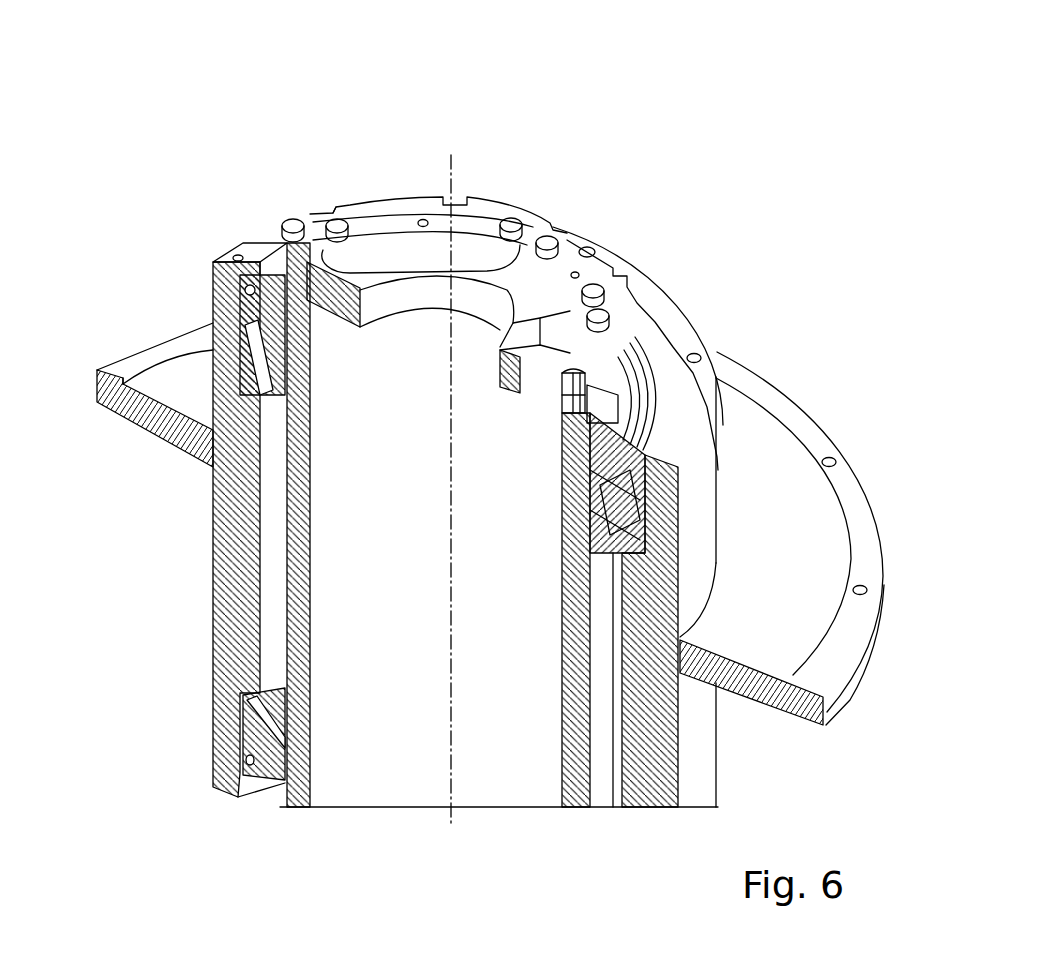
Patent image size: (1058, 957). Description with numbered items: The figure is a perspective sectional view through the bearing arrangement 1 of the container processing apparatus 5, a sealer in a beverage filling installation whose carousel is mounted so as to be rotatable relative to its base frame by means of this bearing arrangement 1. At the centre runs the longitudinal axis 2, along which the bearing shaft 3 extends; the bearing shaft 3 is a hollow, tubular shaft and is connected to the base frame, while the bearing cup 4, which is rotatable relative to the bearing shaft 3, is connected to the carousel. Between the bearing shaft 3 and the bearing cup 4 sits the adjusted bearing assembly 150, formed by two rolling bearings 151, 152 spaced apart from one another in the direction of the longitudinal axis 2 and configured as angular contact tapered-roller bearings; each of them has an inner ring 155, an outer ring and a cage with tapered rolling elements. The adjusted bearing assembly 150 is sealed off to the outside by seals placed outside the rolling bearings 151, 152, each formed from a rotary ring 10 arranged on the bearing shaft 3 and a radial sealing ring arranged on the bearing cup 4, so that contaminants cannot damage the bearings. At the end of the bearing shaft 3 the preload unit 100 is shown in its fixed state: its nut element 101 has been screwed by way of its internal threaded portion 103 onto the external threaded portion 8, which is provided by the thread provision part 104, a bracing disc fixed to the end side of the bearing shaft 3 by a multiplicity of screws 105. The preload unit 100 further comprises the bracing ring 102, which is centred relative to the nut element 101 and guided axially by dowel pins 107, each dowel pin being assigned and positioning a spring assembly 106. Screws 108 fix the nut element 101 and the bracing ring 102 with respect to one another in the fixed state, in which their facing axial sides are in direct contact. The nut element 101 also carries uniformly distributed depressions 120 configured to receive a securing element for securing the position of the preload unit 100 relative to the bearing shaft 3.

The bearing arrangement 1 is at (100, 145).
The container processing apparatus 5 is at (175, 85).
The longitudinal axis 2 is at (453, 818).
The bearing shaft 3 is at (300, 540).
The bearing cup 4 is at (813, 503).
The threaded portion 8 is at (650, 370).
The rotary ring 10 is at (605, 428).
The preload unit 100 is at (565, 182).
The nut element 101 is at (630, 317).
The bracing ring 102 is at (262, 260).
The threaded portion 103 is at (600, 342).
The thread provision part 104 is at (470, 228).
The screws 105 is at (242, 300).
The spring assembly 106 is at (600, 410).
The dowel pins 107 is at (580, 368).
The screws 108 is at (295, 222).
The depressions 120 is at (345, 208).
The adjusted bearing assembly 150 is at (122, 472).
The rolling bearing 151 is at (240, 352).
The rolling bearing 152 is at (248, 705).
The inner ring 155 is at (645, 505).